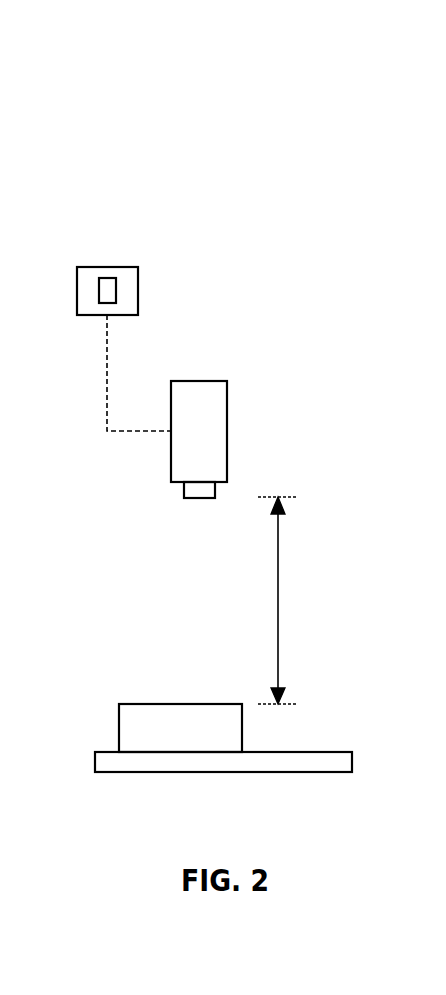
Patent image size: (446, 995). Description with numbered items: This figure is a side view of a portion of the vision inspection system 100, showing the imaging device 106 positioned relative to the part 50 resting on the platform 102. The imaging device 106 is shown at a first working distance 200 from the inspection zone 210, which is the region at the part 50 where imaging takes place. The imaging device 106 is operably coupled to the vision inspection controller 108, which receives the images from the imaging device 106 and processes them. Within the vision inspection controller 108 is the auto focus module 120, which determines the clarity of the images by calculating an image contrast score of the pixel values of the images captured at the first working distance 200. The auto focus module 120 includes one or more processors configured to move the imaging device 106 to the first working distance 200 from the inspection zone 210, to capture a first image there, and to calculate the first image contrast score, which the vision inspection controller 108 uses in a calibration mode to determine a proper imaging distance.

The vision inspection system 100 is at (258, 305).
The vision inspection controller 108 is at (107, 266).
The auto focus module 120 is at (117, 290).
The imaging device 106 is at (197, 398).
The first working distance 200 is at (280, 602).
The inspection zone 210 is at (242, 735).
The part 50 is at (119, 729).
The platform 102 is at (327, 752).